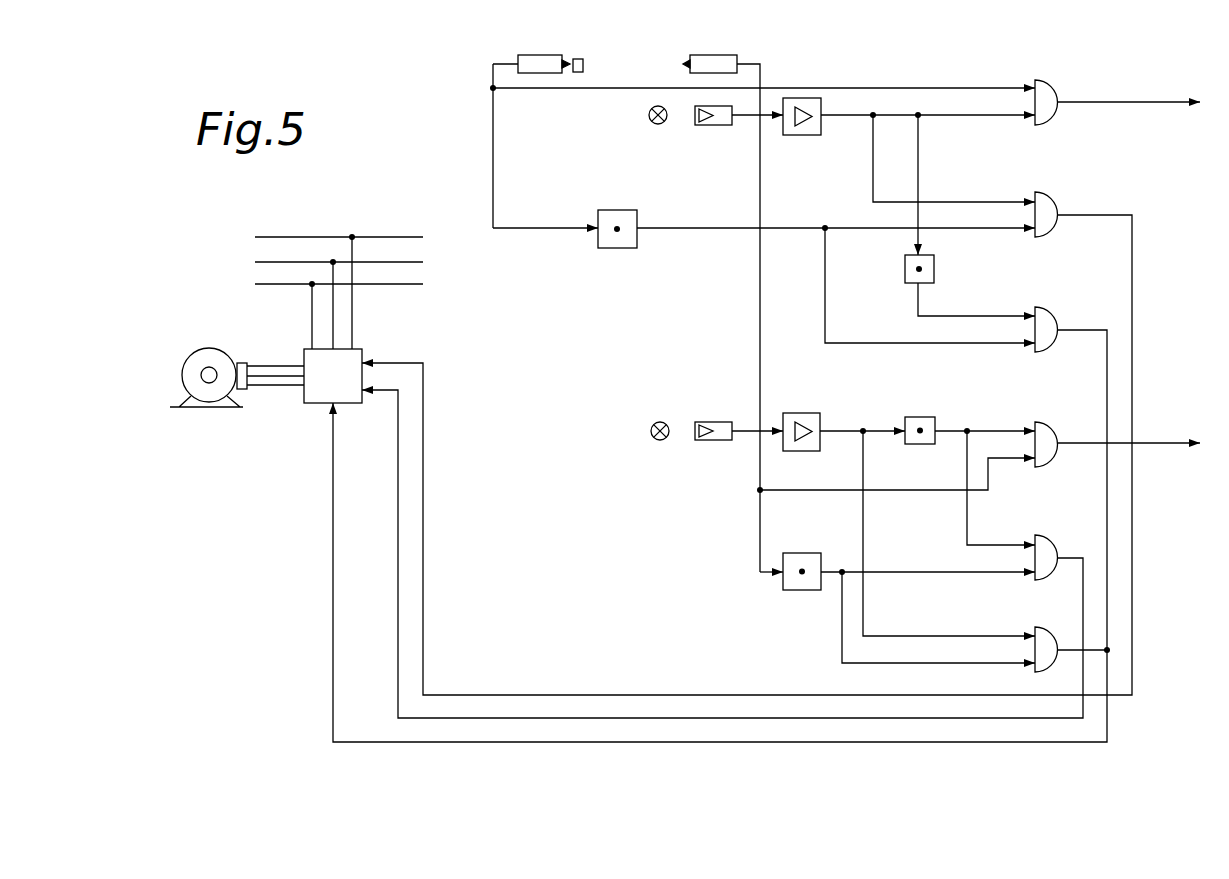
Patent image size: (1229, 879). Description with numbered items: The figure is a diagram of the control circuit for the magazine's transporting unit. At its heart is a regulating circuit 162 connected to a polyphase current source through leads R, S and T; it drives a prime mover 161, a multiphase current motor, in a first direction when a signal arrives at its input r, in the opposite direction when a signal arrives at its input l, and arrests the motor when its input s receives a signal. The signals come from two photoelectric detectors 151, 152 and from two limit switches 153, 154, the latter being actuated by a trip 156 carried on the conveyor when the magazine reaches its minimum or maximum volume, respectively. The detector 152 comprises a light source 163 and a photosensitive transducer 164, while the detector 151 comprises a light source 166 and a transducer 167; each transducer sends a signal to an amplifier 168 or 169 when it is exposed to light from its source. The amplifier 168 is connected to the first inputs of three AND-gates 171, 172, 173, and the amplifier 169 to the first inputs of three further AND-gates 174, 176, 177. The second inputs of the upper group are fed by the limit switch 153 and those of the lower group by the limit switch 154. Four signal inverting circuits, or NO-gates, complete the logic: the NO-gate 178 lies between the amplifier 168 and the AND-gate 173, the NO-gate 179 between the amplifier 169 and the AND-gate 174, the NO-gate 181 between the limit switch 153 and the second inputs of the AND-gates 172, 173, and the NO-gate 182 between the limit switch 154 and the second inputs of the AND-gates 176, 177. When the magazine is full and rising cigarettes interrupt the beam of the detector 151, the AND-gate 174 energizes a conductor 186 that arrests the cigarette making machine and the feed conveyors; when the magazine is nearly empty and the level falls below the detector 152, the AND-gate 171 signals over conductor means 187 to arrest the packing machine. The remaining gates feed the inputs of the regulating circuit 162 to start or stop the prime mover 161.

The photoelectric detector 151 is at (698, 469).
The photoelectric detector 152 is at (693, 151).
The limit switch 153 is at (543, 55).
The limit switch 154 is at (723, 55).
The trip 156 is at (594, 40).
The prime mover 161 is at (186, 406).
The regulating circuit 162 is at (350, 358).
The light source 163 is at (647, 118).
The photosensitive transducer 164 is at (717, 125).
The light source 166 is at (658, 420).
The photosensitive transducer 167 is at (724, 392).
The amplifier 168 is at (808, 97).
The amplifier 169 is at (816, 388).
The AND-gate 171 is at (1043, 90).
The AND-gate 172 is at (1047, 204).
The AND-gate 173 is at (1047, 320).
The AND-gate 174 is at (1043, 433).
The AND-gate 176 is at (1045, 537).
The AND-gate 177 is at (1046, 606).
The NO-gate 178 is at (907, 266).
The NO-gate 179 is at (930, 388).
The NO-gate 181 is at (630, 217).
The NO-gate 182 is at (822, 530).
The conductor 186 is at (1145, 441).
The conductor means 187 is at (1138, 100).